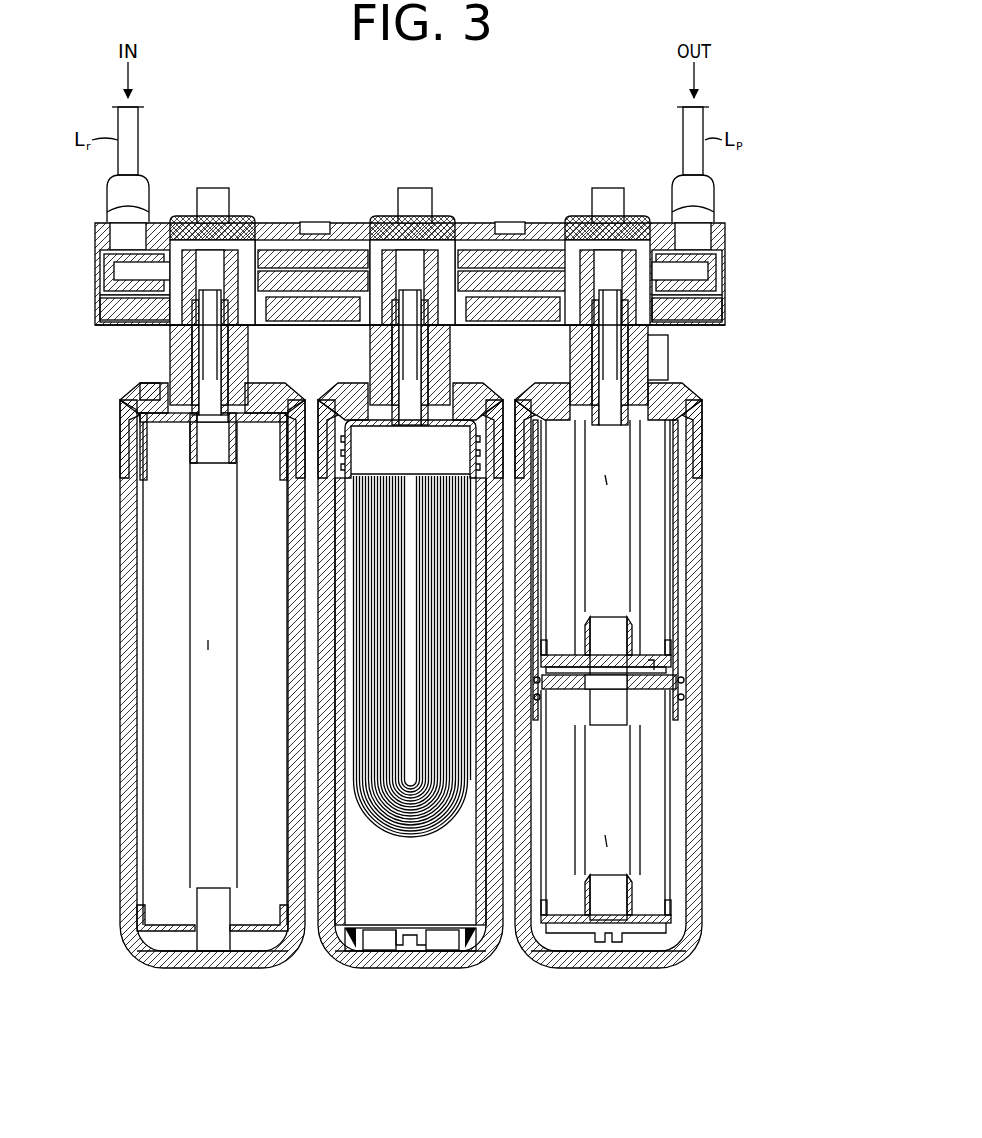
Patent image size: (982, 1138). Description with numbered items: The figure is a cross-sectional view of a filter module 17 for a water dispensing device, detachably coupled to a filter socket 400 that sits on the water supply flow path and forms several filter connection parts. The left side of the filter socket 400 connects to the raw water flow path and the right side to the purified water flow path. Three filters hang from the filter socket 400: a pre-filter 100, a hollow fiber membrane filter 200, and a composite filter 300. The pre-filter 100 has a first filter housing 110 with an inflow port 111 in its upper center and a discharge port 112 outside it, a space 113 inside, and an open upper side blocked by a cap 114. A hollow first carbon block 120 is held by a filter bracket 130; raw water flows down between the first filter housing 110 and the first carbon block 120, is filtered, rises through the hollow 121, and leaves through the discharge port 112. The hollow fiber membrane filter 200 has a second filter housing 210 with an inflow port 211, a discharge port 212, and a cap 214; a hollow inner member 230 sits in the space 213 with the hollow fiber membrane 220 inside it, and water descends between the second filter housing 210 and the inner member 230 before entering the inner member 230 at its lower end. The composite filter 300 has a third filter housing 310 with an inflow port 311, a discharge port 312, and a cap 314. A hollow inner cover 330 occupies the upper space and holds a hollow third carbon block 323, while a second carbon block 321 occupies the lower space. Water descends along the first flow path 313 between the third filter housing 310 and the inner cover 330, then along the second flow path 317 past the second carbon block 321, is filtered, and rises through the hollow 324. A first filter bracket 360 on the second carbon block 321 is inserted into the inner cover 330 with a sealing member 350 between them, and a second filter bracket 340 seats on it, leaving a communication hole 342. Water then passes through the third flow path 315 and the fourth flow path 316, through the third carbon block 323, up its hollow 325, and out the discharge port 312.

The filter module 17 is at (748, 362).
The pre-filter 100 is at (135, 965).
The first filter housing 110 is at (120, 528).
The inflow port 111 is at (195, 366).
The discharge port 112 is at (228, 348).
The space 113 is at (137, 492).
The cap 114 is at (122, 394).
The first carbon block 120 is at (158, 600).
The hollow 121 is at (210, 645).
The filter bracket 130 is at (200, 414).
The hollow fiber membrane filter 200 is at (408, 985).
The second filter housing 210 is at (458, 965).
The inflow port 211 is at (405, 320).
The discharge port 212 is at (432, 360).
The space 213 is at (432, 890).
The cap 214 is at (325, 392).
The hollow fiber membrane 220 is at (380, 820).
The inner member 230 is at (338, 930).
The composite filter 300 is at (630, 985).
The third filter housing 310 is at (698, 744).
The inflow port 311 is at (655, 366).
The discharge port 312 is at (655, 345).
The first flow path 313 is at (688, 494).
The cap 314 is at (525, 392).
The third flow path 315 is at (676, 655).
The fourth flow path 316 is at (682, 514).
The second flow path 317 is at (680, 772).
The second carbon block 321 is at (660, 808).
The third carbon block 323 is at (636, 550).
The hollow 324 is at (605, 840).
The hollow 325 is at (605, 480).
The inner cover 330 is at (680, 580).
The second filter bracket 340 is at (630, 635).
The communication hole 342 is at (655, 668).
The sealing member 350 is at (680, 680).
The first filter bracket 360 is at (675, 697).
The filter socket 400 is at (282, 225).